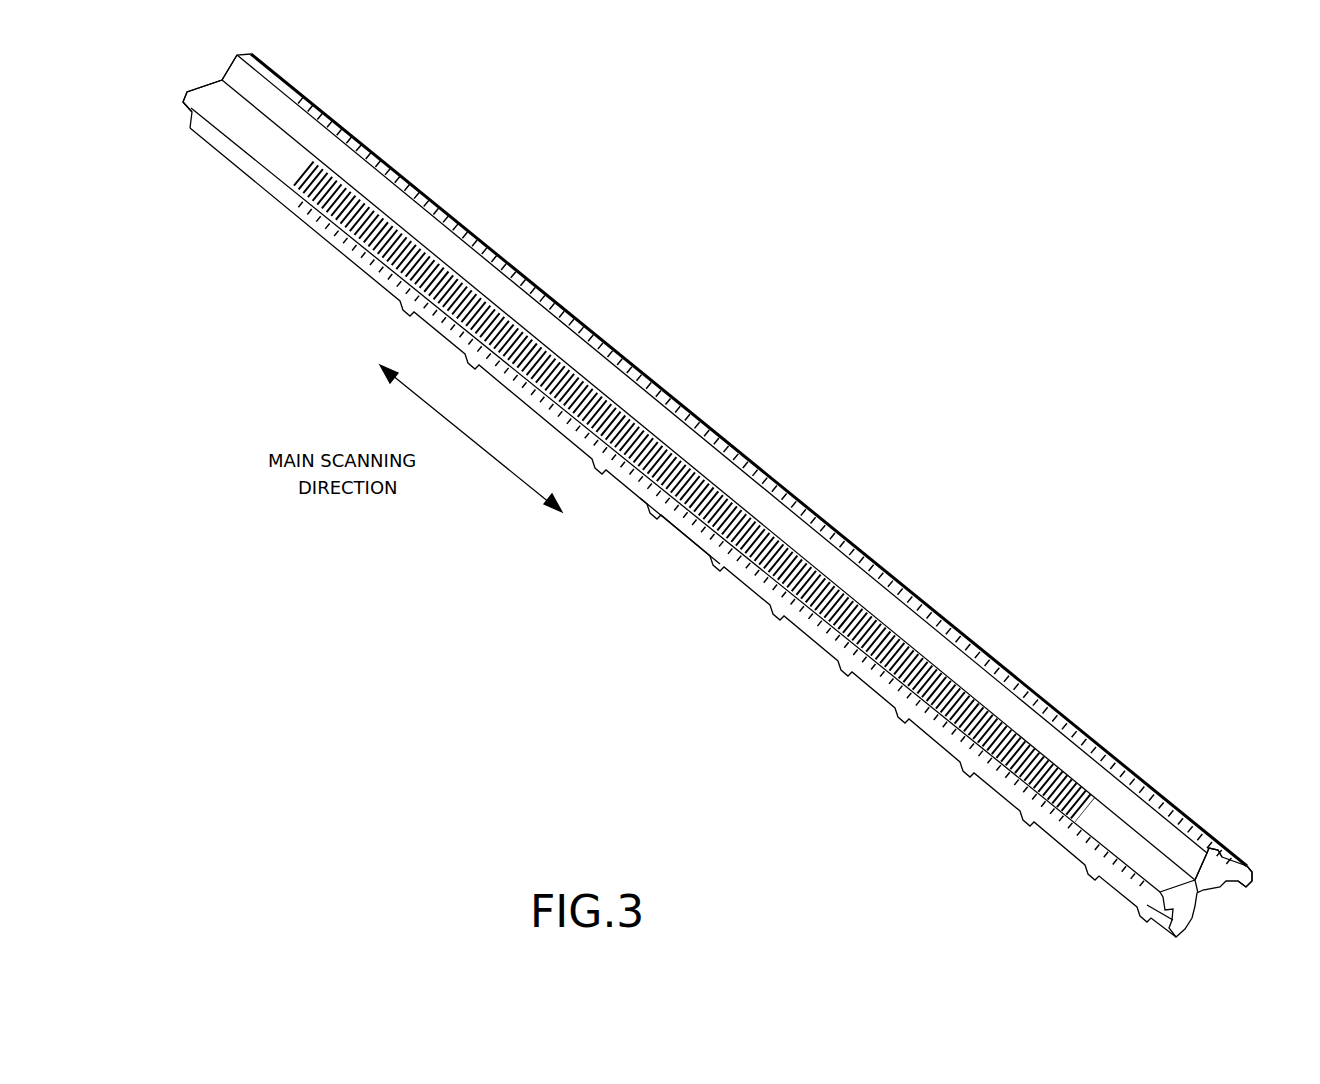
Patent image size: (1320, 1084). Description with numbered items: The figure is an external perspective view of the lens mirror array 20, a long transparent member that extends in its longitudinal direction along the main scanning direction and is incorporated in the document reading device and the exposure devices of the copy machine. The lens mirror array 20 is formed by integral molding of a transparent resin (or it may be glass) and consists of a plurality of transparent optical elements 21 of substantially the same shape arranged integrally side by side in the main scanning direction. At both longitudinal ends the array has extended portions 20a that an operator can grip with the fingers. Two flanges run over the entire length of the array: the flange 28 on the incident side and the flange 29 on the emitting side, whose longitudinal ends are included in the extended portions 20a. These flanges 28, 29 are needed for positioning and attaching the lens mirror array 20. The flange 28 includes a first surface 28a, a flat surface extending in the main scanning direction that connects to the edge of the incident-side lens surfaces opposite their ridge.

The lens mirror array 20 is at (852, 486).
The extended portion 20a is at (215, 90).
The optical element 21 is at (340, 214).
The flange on the incident side 28 is at (1110, 879).
The first surface 28a is at (685, 534).
The flange on the emitting side 29 is at (1250, 880).